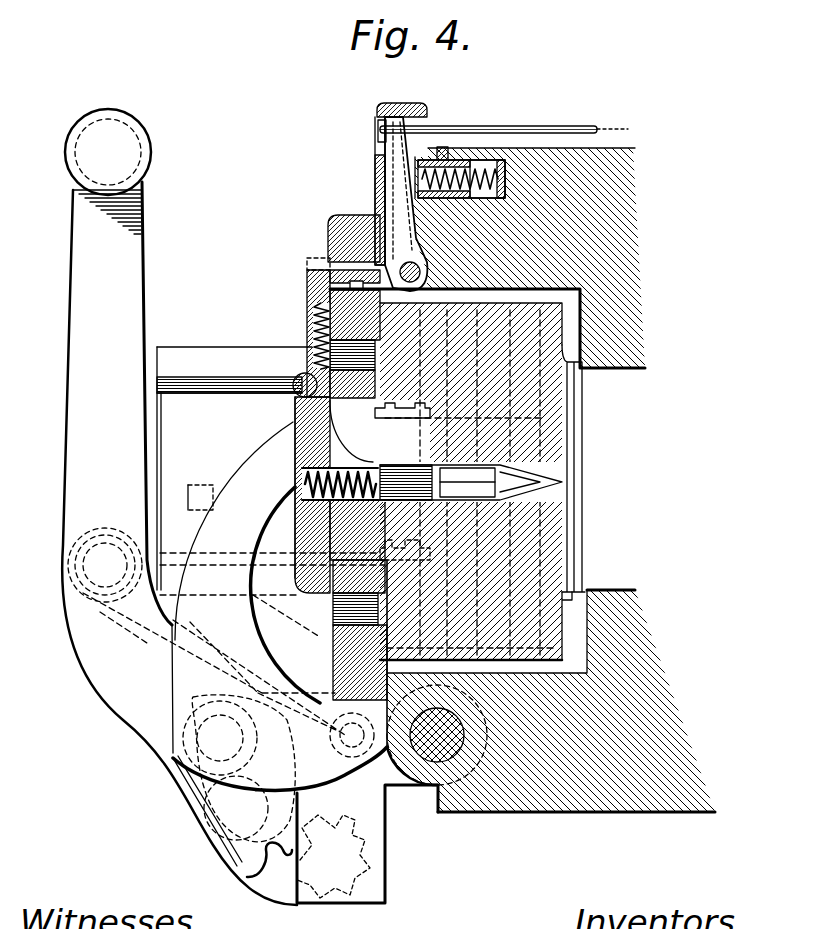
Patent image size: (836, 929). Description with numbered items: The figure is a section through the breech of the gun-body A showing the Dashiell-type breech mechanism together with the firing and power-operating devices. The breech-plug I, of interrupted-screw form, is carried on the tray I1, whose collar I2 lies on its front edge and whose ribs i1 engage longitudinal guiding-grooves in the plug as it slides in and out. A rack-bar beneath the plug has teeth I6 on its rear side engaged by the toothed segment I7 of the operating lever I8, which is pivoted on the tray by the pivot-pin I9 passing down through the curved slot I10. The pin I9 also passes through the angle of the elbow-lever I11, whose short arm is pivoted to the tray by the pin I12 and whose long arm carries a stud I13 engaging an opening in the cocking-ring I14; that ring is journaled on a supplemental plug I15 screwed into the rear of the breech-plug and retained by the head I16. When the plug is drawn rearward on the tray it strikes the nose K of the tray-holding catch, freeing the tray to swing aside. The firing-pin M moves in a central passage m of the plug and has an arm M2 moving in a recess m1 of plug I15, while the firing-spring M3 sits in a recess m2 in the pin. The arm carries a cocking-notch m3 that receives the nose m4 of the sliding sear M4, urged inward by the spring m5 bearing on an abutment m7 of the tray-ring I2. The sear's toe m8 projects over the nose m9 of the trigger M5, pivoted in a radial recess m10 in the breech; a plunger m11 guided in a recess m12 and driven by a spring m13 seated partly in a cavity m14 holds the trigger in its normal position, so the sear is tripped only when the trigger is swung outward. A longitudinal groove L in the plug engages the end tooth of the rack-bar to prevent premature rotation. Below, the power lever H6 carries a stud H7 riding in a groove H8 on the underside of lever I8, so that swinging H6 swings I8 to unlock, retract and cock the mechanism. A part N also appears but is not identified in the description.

The gun-body A is at (598, 248).
The rod N is at (580, 130).
The trigger M5 is at (390, 180).
The collar I2 is at (332, 228).
The trigger-engaging toe m8 is at (350, 282).
The nose of the trigger m9 is at (360, 285).
The cavity m14 is at (430, 158).
The spring-pressed plunger m11 is at (458, 162).
The spring m13 is at (492, 167).
The radial recess m10 is at (420, 232).
The recess m12 is at (503, 197).
The spring-pressed sliding sear M4 is at (318, 263).
The abutment m7 is at (318, 288).
The spring m5 is at (320, 318).
The nose of the sear m4 is at (318, 345).
The cocking-notch m3 is at (310, 385).
The ribs i1 is at (195, 358).
The tray I1 is at (271, 471).
The arm M2 is at (298, 410).
The supplemental plug I15 is at (297, 445).
The breech mechanism operating lever I8 is at (107, 336).
The nose of the tray-holding catch K is at (190, 498).
The firing-spring M3 is at (295, 486).
The recess m1 is at (297, 521).
The recess m2 is at (318, 553).
The cocking-ring I14 is at (342, 438).
The stud I13 is at (380, 440).
The breech-plug I is at (547, 432).
The central passage m is at (568, 468).
The firing-pin M is at (440, 515).
The longitudinal groove L is at (573, 588).
The enlargement or head I16 is at (300, 578).
The elbow-lever I11 is at (214, 664).
The pin I12 is at (333, 752).
The pivot-pin I9 is at (175, 762).
The curved slot I10 is at (208, 812).
The toothed segment I7 is at (237, 857).
The teeth or cogs I6 is at (360, 825).
The stud H7 is at (93, 596).
The groove H8 is at (92, 634).
The lever H6 is at (128, 627).